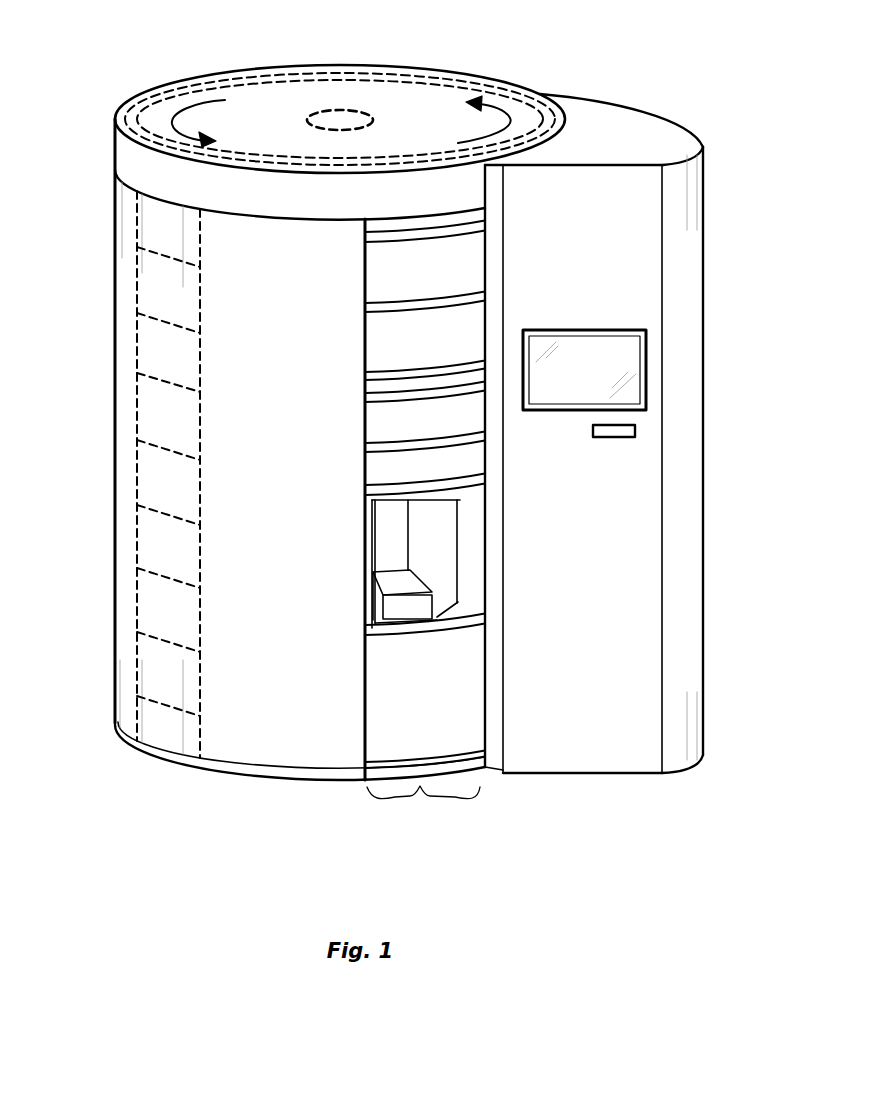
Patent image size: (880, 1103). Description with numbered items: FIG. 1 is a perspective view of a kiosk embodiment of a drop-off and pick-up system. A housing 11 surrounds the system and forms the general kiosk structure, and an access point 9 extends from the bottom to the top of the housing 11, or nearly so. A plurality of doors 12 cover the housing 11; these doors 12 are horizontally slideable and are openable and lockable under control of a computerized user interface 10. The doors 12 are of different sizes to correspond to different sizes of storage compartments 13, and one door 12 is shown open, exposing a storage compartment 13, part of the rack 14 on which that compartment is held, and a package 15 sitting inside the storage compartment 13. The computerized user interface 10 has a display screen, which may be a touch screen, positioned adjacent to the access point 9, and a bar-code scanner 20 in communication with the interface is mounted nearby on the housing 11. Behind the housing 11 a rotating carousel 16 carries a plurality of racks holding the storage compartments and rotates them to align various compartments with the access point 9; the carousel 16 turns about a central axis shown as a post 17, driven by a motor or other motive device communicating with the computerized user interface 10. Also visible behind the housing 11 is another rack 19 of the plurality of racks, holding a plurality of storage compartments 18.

The access point 9 is at (417, 794).
The computerized user interface 10 is at (620, 347).
The housing 11 is at (115, 213).
The doors 12 is at (393, 388).
The storage compartment 13 is at (392, 543).
The rack 14 is at (373, 592).
The package 15 is at (418, 609).
The rotating carousel 16 is at (197, 87).
The post 17 is at (348, 113).
The storage compartments 18 is at (160, 381).
The rack 19 is at (137, 333).
The bar-code scanner 20 is at (620, 437).